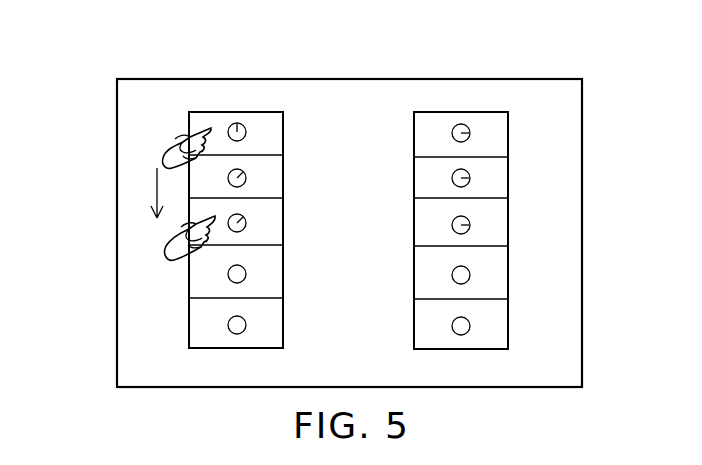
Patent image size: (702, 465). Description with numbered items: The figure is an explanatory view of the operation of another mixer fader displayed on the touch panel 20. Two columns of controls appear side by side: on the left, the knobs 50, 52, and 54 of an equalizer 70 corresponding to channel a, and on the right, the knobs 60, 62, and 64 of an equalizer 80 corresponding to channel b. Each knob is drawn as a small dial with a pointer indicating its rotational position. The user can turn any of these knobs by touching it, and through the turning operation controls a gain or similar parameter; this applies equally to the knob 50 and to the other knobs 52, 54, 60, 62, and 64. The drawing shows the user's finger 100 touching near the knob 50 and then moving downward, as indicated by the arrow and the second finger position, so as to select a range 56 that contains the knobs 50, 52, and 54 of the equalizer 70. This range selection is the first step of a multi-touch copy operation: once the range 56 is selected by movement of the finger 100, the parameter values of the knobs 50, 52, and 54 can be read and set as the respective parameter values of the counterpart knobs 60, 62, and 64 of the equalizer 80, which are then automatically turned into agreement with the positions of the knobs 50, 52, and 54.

The touch panel 20 is at (582, 157).
The equalizer 70 is at (309, 325).
The equalizer 80 is at (523, 318).
The knob 50 is at (246, 131).
The knob 52 is at (246, 177).
The knob 54 is at (277, 219).
The range 56 is at (302, 178).
The knob 60 is at (452, 133).
The knob 62 is at (452, 178).
The knob 64 is at (452, 224).
The finger 100 is at (170, 153).